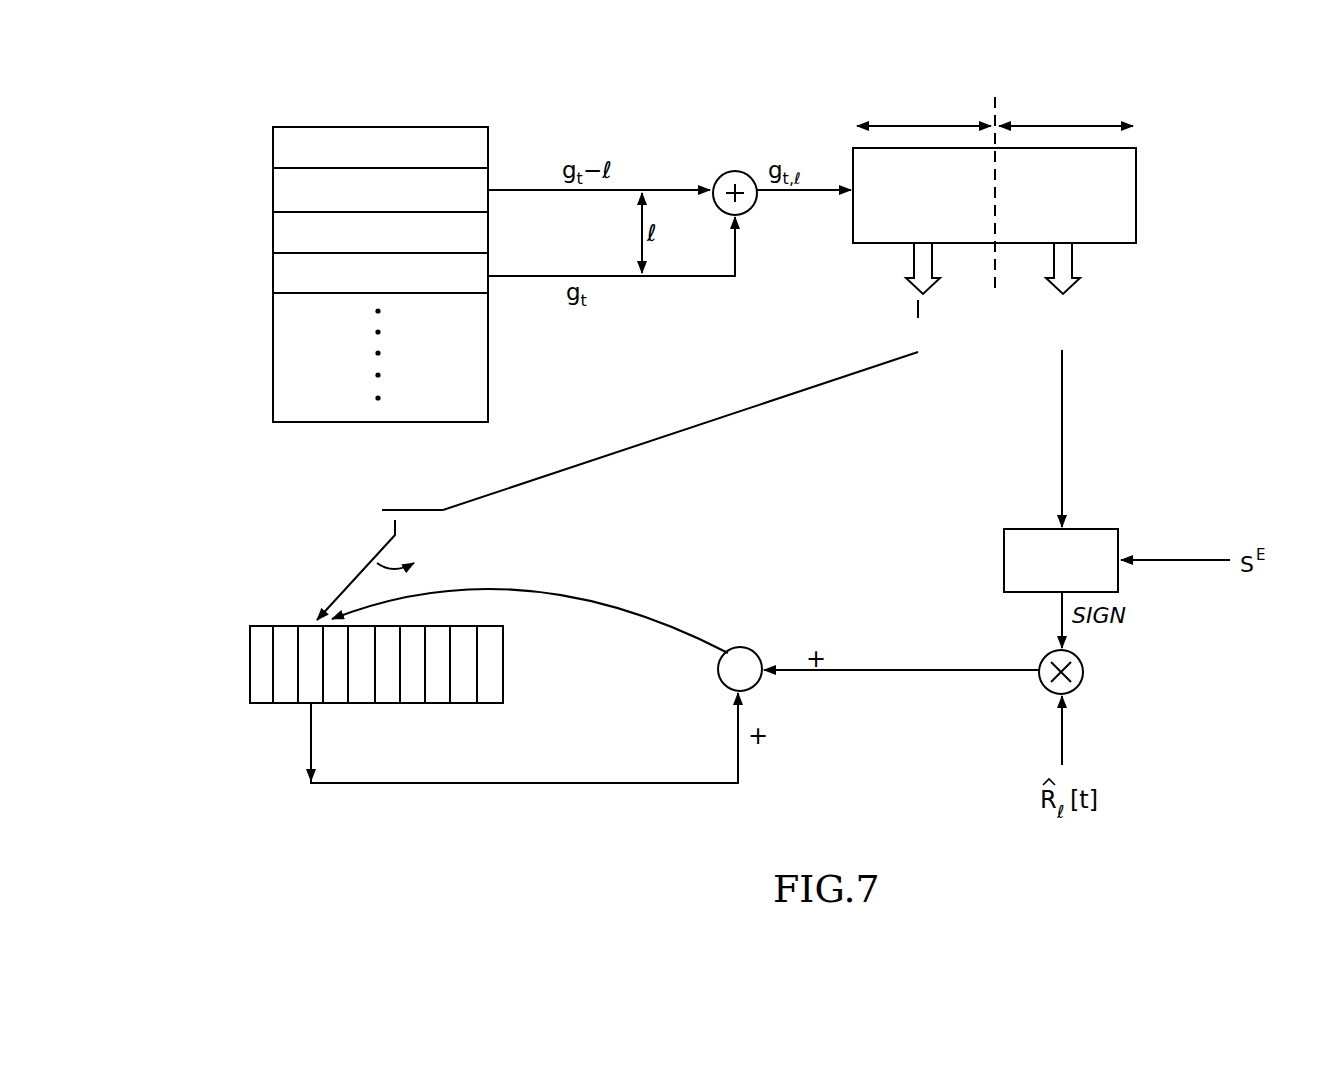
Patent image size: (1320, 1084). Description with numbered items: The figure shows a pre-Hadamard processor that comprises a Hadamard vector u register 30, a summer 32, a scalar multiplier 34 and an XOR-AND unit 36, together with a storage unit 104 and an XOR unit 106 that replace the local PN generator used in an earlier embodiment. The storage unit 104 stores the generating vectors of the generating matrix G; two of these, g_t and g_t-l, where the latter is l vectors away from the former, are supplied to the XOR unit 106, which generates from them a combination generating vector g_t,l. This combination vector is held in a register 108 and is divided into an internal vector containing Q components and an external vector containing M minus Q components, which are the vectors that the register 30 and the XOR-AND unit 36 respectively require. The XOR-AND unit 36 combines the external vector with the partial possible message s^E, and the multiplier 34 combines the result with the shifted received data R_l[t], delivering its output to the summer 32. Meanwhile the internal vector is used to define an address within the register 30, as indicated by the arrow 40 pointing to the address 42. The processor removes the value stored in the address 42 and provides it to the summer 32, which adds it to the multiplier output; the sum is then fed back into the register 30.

The storage unit 104 is at (362, 127).
The XOR unit 106 is at (745, 172).
The combined vector register g_t,l 108 is at (1136, 193).
The XOR-AND unit 36 is at (1095, 529).
The scalar multiplier 34 is at (1083, 672).
The summer 32 is at (750, 648).
The Hadamard vector u register 30 is at (250, 680).
The arrow 40 is at (346, 590).
The address 42 is at (309, 683).